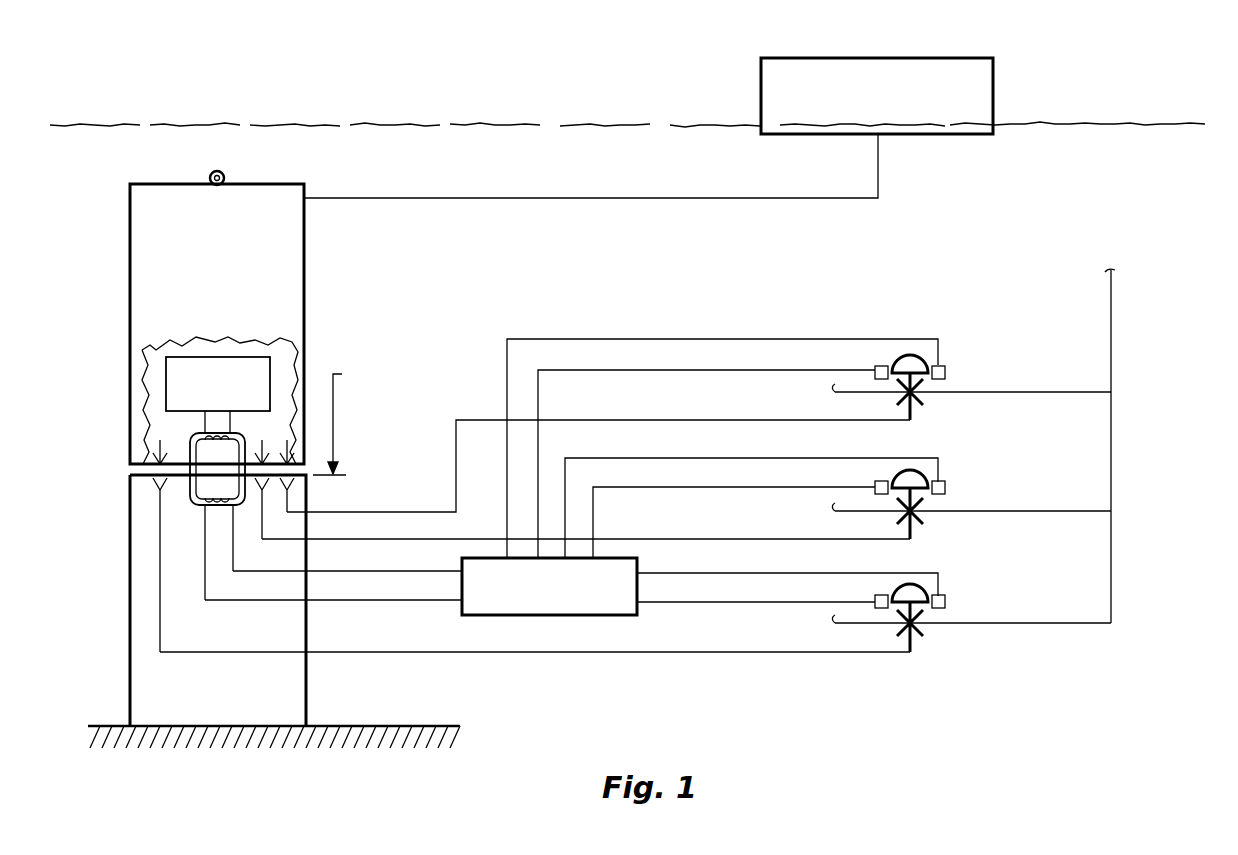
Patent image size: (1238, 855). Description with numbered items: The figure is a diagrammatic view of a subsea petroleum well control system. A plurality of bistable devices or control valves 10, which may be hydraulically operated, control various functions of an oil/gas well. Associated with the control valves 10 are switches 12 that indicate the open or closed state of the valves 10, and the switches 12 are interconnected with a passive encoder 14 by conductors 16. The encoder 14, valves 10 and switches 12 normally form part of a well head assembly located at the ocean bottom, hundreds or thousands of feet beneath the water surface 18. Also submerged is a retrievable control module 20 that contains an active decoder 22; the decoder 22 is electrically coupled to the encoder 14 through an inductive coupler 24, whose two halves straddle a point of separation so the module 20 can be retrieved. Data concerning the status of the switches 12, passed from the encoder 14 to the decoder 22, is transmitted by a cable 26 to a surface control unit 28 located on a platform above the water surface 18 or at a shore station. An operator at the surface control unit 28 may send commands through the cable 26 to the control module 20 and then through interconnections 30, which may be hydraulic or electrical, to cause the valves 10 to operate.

The control valves 10 is at (922, 403).
The switches 12 is at (876, 367).
The passive encoder 14 is at (548, 617).
The conductors 16 is at (716, 365).
The ocean surface 18 is at (561, 124).
The retrievable control module 20 is at (130, 283).
The active decoder 22 is at (166, 386).
The inductive coupler 24 is at (190, 439).
The cable 26 is at (561, 198).
The surface control unit 28 is at (878, 58).
The interconnections 30 is at (393, 512).